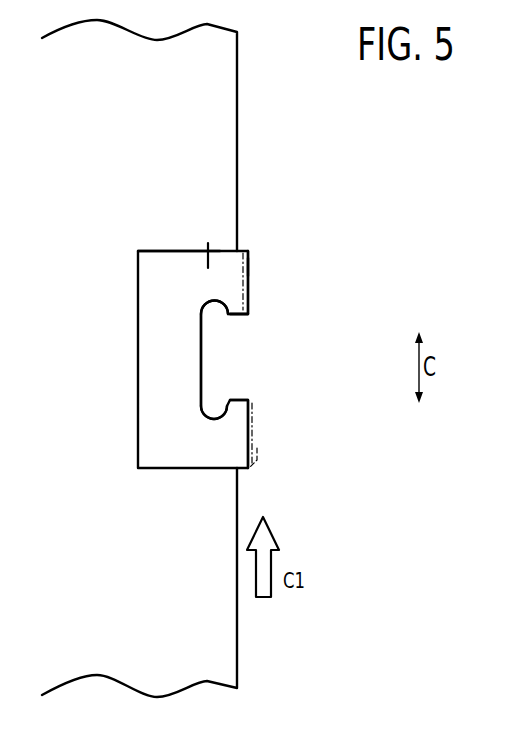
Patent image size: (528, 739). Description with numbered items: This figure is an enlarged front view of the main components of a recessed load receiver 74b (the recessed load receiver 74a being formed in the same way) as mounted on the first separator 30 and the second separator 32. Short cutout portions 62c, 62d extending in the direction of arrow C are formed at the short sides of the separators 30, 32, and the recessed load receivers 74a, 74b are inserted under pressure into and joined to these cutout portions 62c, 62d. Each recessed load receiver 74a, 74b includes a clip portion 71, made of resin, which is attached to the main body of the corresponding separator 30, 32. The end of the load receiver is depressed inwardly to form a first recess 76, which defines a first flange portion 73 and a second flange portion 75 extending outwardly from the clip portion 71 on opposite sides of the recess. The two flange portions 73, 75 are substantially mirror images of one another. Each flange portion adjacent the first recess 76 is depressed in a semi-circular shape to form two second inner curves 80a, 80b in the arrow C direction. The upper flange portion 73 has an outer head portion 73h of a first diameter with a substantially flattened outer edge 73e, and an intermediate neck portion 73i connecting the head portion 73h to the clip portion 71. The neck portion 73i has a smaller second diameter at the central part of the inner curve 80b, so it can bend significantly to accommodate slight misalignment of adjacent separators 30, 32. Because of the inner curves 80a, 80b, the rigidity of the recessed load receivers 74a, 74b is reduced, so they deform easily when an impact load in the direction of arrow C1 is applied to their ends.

The first separator 30 is at (196, 358).
The second separator 32 is at (240, 97).
The clip portion 71 is at (193, 359).
The recessed load receiver 74b is at (176, 225).
The recessed load receiver 74a is at (162, 260).
The first flange portion 73 is at (235, 290).
The intermediate neck portion 73i is at (208, 243).
The flattened outer edge 73e is at (249, 267).
The outer portion (head) 73h is at (249, 313).
The second inner curve 80b is at (215, 303).
The first recess 76 is at (201, 360).
The second inner curve 80a is at (213, 414).
The second flange portion 75 is at (237, 430).
The cutout portion 62d is at (306, 435).
The cutout portion 62c is at (220, 468).